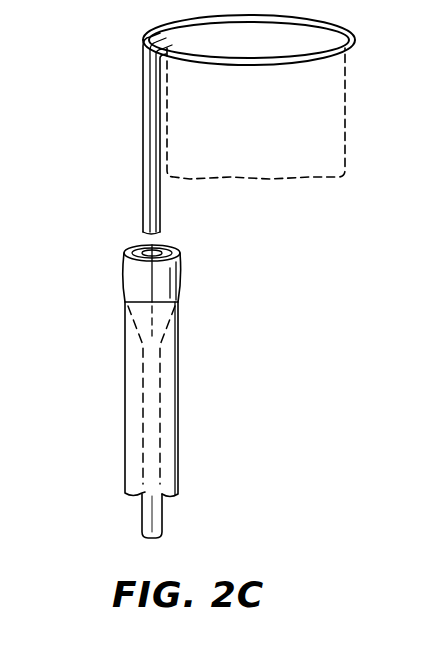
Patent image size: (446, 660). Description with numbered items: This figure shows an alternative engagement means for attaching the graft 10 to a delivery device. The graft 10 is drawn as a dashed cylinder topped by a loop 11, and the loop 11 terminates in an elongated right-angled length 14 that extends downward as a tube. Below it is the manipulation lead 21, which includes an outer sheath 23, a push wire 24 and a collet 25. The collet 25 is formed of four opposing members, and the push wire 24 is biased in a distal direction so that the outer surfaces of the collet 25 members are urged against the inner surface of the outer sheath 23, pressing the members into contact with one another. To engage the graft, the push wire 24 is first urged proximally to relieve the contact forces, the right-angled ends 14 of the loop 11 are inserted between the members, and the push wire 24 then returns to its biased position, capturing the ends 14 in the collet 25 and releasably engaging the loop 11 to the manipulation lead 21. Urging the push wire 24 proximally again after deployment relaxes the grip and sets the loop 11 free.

The graft 10 is at (266, 122).
The loop 11 is at (355, 44).
The elongated right-angled lengths 14 is at (143, 162).
The manipulation lead 21 is at (100, 343).
The outer sheath 23 is at (125, 488).
The push wire 24 is at (142, 419).
The collet 25 is at (182, 263).